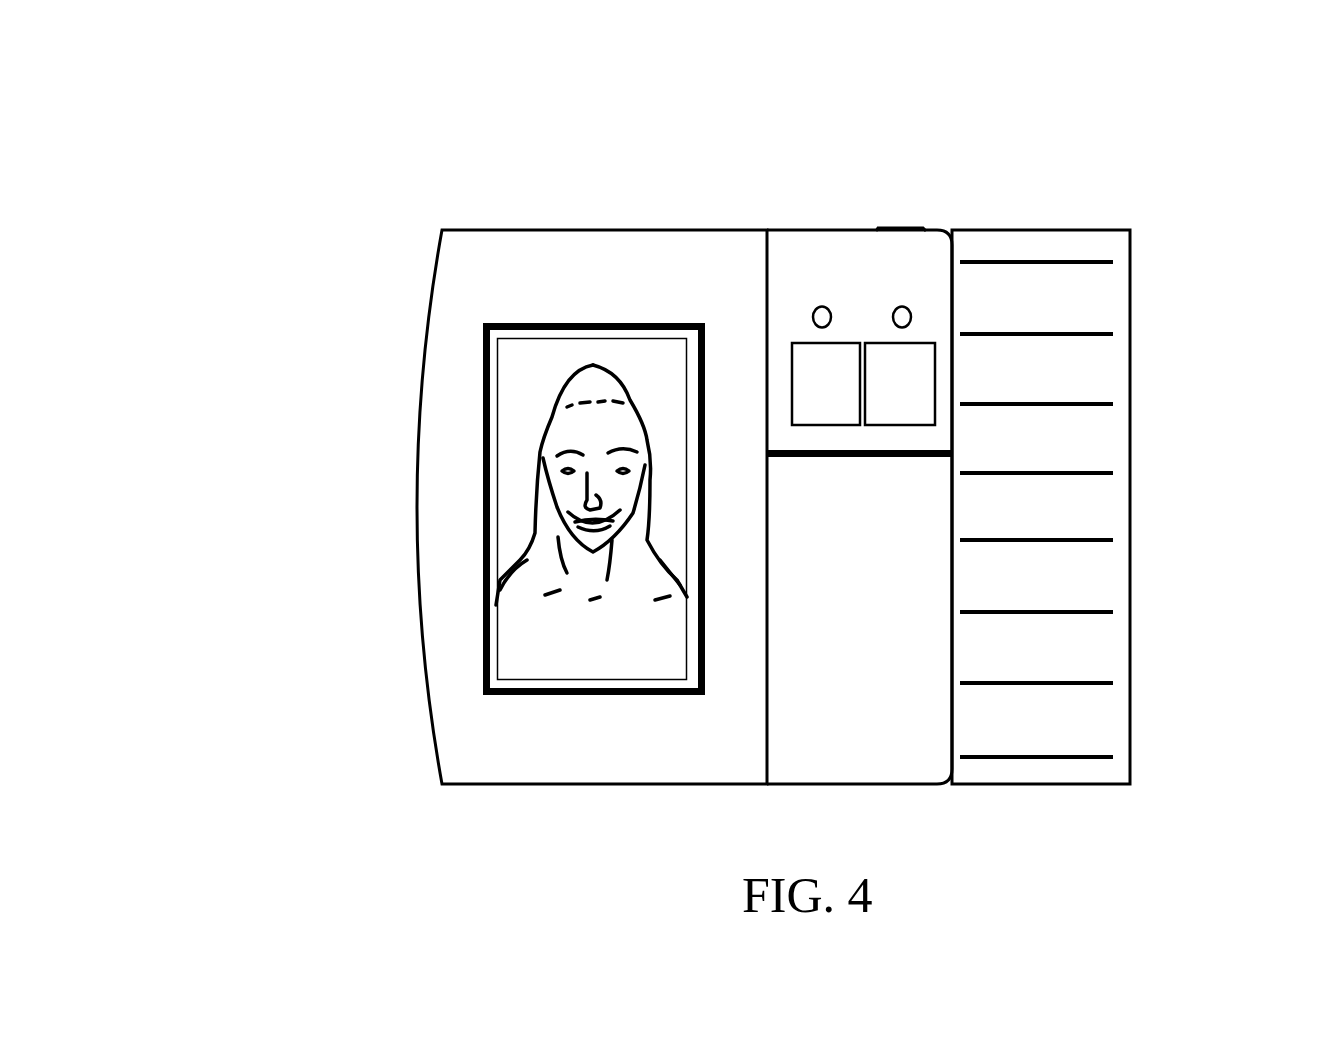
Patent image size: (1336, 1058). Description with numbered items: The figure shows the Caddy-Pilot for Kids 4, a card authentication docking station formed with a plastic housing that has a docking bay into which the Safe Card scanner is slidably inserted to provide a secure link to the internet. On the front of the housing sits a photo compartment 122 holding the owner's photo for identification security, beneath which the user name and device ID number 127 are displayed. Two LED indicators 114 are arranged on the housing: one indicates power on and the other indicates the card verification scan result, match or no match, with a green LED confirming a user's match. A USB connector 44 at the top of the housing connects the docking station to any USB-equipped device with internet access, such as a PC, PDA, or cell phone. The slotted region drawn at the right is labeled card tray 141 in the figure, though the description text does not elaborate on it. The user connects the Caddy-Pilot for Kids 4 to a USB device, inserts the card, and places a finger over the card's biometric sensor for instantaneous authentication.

The Caddy-Pilot for Kids 4 is at (578, 223).
The LED indicators 114 is at (896, 293).
The USB 2 connector 44 is at (880, 222).
The photo compartment 122 is at (515, 449).
The user name and device ID number 127 is at (506, 662).
The card tray 141 is at (1104, 508).